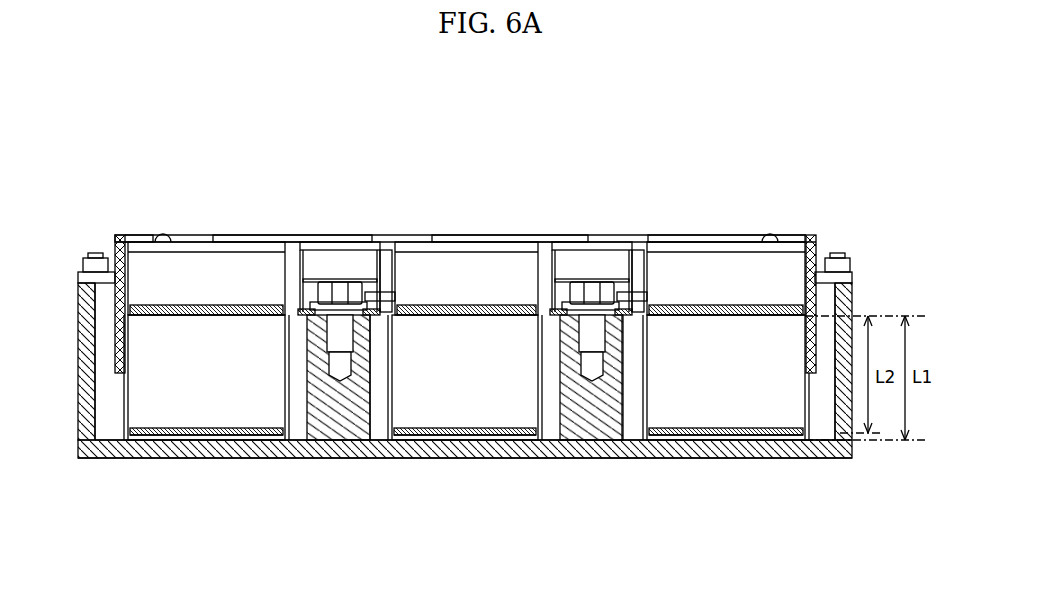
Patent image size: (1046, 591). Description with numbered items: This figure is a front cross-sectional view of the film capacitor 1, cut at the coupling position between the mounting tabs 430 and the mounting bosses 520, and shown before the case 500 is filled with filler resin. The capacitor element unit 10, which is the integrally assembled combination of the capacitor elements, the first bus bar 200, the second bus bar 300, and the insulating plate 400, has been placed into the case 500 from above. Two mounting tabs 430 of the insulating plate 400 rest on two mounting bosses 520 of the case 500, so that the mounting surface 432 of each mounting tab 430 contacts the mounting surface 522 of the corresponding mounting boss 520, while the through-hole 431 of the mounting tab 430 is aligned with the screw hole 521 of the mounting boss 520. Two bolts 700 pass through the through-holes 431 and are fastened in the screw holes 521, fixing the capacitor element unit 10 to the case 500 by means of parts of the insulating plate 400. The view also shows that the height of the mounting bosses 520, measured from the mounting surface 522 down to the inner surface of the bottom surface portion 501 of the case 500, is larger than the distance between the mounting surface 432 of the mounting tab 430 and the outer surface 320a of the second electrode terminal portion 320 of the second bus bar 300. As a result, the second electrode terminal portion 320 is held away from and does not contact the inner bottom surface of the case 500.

The film capacitor 1 is at (741, 193).
The capacitor element unit 10 is at (130, 227).
The first bus bar 200 is at (195, 238).
The second bus bar 300 is at (125, 393).
The second electrode terminal portion 320 is at (172, 428).
The outer surface 320a is at (205, 440).
The insulating plate 400 is at (815, 245).
The mounting tab 430 is at (400, 250).
The through-hole 431 is at (305, 316).
The mounting surface 432 is at (372, 316).
The case 500 is at (855, 300).
The bottom surface portion 501 is at (387, 458).
The mounting boss 520 is at (372, 378).
The screw hole 521 is at (300, 456).
The mounting surface 522 is at (292, 247).
The bolt 700 is at (338, 280).